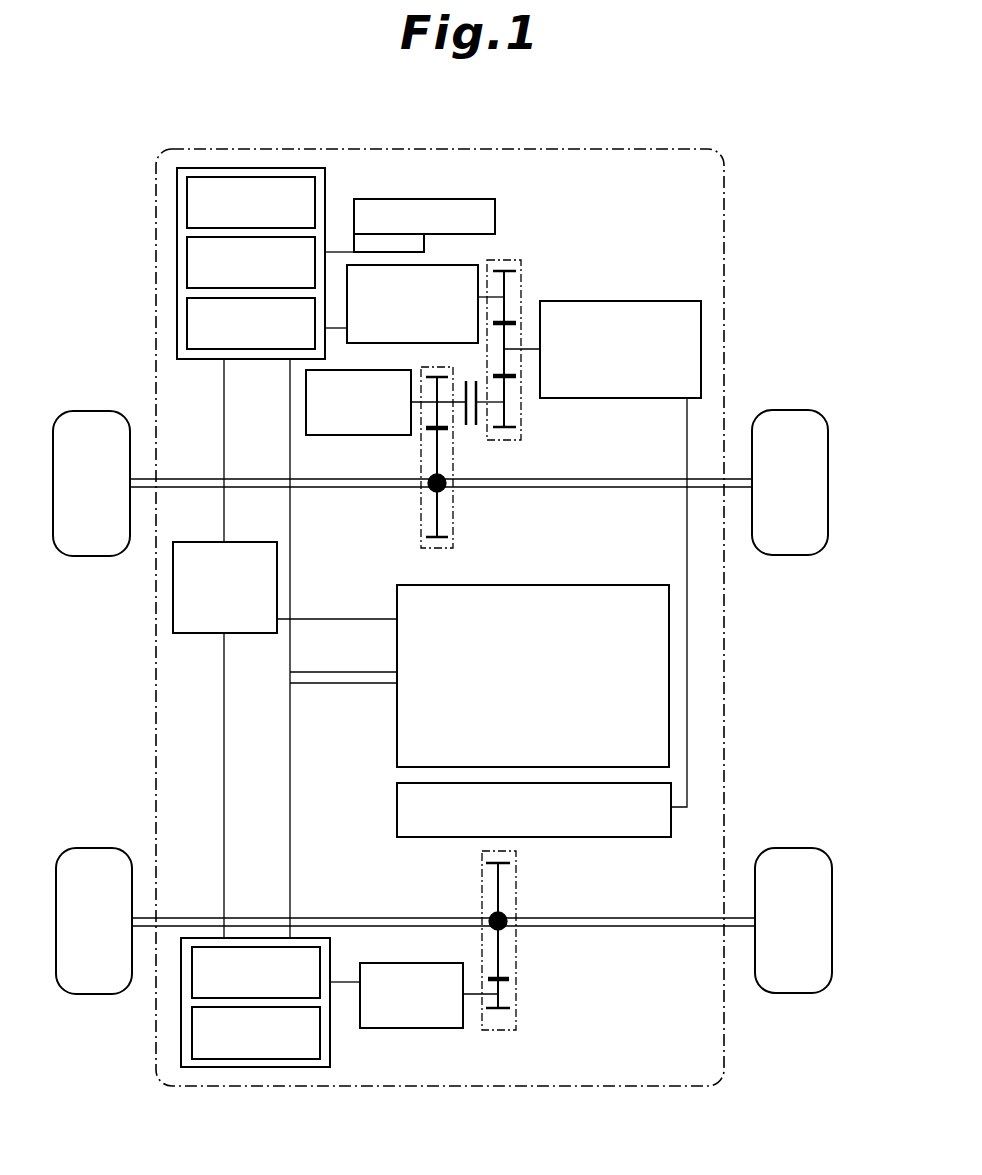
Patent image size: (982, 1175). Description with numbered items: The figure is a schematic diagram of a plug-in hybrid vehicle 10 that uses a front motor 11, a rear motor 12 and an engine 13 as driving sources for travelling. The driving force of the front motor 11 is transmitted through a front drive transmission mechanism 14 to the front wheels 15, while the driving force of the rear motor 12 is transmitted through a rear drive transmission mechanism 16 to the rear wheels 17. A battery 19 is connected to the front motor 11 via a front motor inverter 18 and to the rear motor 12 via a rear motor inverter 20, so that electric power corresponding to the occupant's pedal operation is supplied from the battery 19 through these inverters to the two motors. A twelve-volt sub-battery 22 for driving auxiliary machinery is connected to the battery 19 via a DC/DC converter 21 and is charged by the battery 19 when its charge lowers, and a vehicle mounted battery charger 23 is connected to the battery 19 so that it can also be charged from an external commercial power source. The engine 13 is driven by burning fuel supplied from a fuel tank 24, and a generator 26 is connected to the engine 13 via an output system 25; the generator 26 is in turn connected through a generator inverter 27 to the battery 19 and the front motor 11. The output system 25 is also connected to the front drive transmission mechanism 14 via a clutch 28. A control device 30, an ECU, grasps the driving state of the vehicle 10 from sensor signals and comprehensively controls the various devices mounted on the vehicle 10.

The hybrid vehicle 10 is at (781, 196).
The front motor 11 is at (306, 396).
The rear motor 12 is at (415, 1028).
The engine 13 is at (701, 318).
The front drive transmission mechanism 14 is at (421, 517).
The front wheels 15 is at (87, 411).
The rear drive transmission mechanism 16 is at (516, 963).
The rear wheels 17 is at (97, 848).
The front motor inverter 18 is at (187, 322).
The battery 19 is at (397, 726).
The rear motor inverter 20 is at (192, 980).
The DC/DC converter 21 is at (187, 204).
The sub-battery 22 is at (460, 199).
The vehicle mounted battery charger 23 is at (192, 1036).
The fuel tank 24 is at (598, 837).
The output system 25 is at (521, 272).
The generator 26 is at (343, 263).
The generator inverter 27 is at (187, 266).
The clutch 28 is at (471, 430).
The control device 30 is at (173, 593).